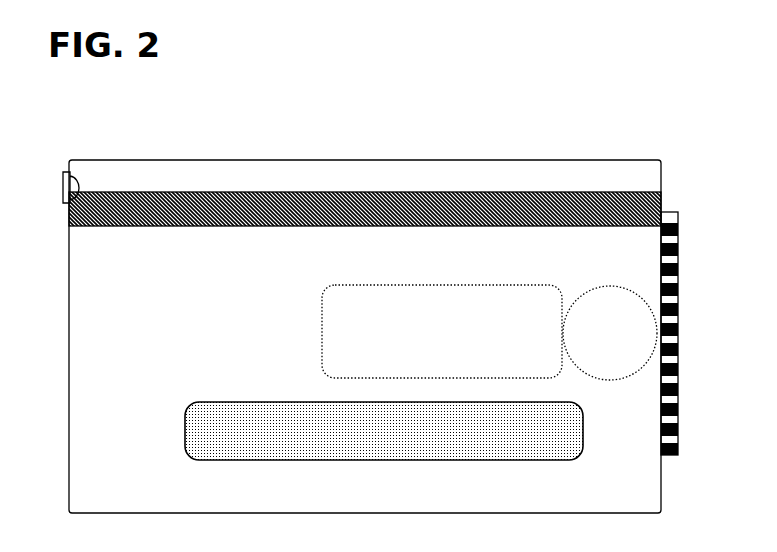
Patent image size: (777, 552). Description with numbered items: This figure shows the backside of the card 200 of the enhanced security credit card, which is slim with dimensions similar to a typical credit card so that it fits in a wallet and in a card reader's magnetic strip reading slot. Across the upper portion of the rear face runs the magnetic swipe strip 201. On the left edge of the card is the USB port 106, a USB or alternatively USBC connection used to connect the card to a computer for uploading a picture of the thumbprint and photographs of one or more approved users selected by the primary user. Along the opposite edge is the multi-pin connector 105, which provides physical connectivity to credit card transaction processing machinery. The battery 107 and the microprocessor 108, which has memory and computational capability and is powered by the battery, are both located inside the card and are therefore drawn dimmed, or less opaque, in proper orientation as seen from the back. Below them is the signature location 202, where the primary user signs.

The backside of the card 200 is at (474, 126).
The magnetic swipe strip 201 is at (175, 228).
The USB port 106 is at (64, 188).
The multi-pin connector 105 is at (667, 212).
The microprocessor 108 is at (442, 331).
The battery 107 is at (610, 333).
The signature location 202 is at (262, 405).